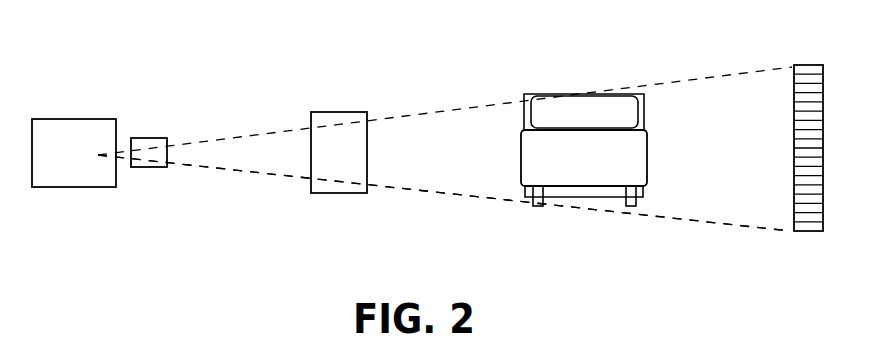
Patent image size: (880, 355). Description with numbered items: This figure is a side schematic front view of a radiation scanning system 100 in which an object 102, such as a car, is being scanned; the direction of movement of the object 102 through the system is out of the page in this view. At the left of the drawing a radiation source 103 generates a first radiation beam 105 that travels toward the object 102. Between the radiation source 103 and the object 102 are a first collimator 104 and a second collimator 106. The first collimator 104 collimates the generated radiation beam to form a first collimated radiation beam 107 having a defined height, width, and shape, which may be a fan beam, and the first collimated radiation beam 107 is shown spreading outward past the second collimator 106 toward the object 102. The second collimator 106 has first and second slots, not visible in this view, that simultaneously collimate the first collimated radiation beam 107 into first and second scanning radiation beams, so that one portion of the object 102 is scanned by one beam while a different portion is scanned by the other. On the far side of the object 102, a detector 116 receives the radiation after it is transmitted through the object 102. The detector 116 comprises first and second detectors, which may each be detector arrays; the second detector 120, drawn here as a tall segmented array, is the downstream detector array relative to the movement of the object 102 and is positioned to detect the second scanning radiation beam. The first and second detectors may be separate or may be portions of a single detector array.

The radiation scanning system 100 is at (76, 85).
The object 102 is at (580, 167).
The light source 103 is at (73, 187).
The first collimator 104 is at (145, 167).
The first radiation beam 105 is at (118, 152).
The second collimator 106 is at (340, 112).
The first collimated radiation beam 107 is at (253, 173).
The detector 116 is at (792, 62).
The second detector 120 is at (794, 133).